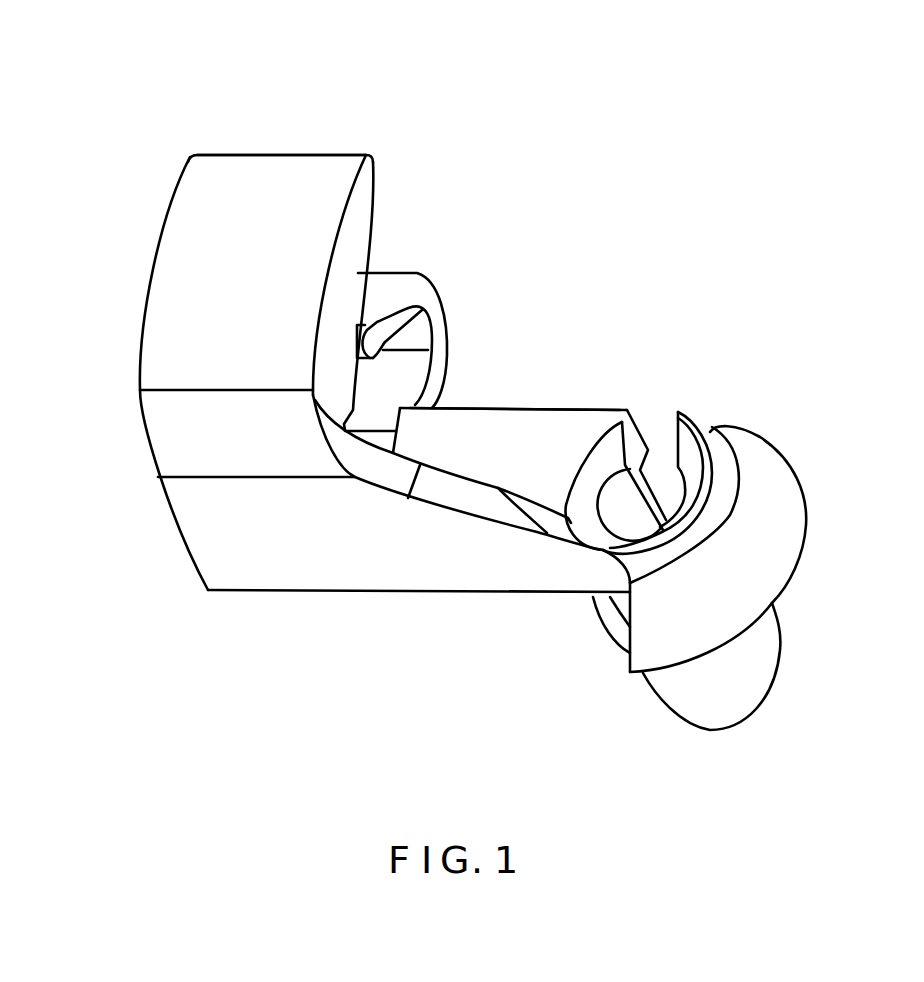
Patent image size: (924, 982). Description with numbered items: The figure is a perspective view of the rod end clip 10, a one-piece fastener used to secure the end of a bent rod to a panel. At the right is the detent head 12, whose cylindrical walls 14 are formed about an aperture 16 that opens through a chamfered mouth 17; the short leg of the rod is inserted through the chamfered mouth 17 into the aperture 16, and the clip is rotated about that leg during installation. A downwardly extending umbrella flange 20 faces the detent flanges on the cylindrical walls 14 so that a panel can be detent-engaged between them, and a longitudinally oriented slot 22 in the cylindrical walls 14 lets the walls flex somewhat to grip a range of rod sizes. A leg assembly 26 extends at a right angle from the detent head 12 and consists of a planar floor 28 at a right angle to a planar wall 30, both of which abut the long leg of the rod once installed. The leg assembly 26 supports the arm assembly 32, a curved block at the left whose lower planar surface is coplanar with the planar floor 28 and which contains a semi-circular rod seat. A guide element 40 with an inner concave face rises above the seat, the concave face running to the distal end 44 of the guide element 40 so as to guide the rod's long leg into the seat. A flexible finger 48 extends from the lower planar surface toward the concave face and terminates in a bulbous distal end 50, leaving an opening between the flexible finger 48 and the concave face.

The rod end clip 10 is at (666, 280).
The detent head 12 is at (708, 415).
The cylindrical walls 14 is at (747, 672).
The aperture 16 is at (623, 513).
The chamfered mouth 17 is at (596, 450).
The umbrella flange 20 is at (783, 527).
The slot 22 is at (642, 445).
The leg assembly 26 is at (467, 400).
The planar floor 28 is at (507, 423).
The planar wall 30 is at (435, 563).
The arm assembly 32 is at (238, 130).
The guide element 40 is at (166, 224).
The distal end 44 is at (298, 155).
The flexible finger 48 is at (393, 300).
The bulbous distal end 50 is at (373, 342).